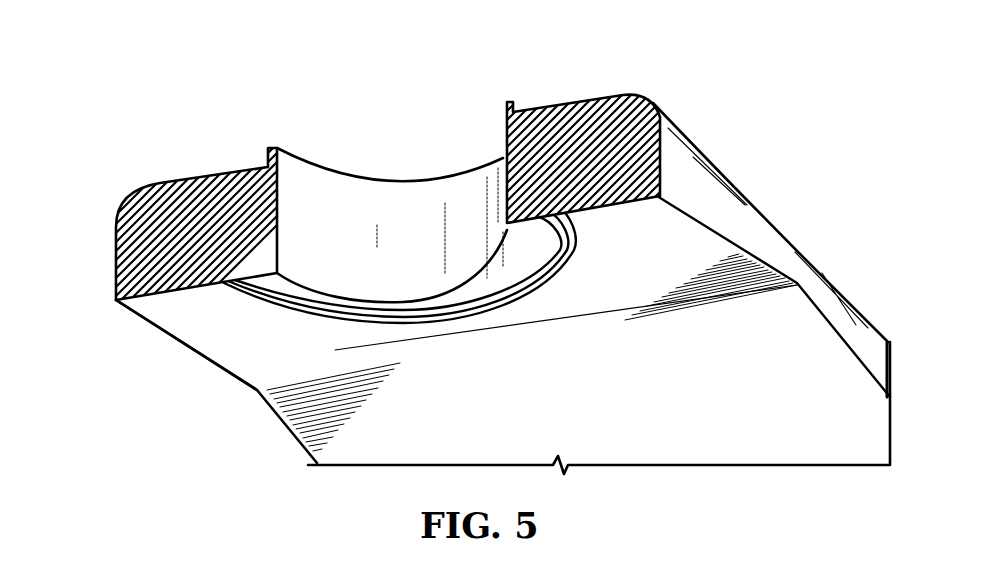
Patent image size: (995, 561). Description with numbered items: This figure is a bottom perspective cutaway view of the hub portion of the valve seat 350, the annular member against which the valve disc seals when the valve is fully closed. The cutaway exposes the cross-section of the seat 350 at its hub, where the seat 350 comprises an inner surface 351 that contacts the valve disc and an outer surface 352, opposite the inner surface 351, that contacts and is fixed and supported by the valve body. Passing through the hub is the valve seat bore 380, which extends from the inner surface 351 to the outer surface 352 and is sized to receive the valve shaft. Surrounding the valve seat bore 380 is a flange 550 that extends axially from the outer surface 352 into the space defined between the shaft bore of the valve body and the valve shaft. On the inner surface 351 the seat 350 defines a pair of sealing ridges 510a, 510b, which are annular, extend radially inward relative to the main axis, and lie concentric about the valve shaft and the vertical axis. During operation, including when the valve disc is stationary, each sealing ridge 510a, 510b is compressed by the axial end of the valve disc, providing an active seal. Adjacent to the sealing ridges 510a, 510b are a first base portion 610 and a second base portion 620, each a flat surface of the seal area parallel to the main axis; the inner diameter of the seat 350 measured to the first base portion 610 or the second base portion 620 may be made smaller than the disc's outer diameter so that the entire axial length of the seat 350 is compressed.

The seat 350 is at (763, 110).
The inner surface 351 is at (213, 335).
The outer surface 352 is at (190, 177).
The valve seat bore 380 is at (323, 202).
The flange 550 is at (513, 104).
The first base portion 610 is at (530, 268).
The first sealing ridge 510a is at (535, 293).
The second sealing ridge 510b is at (573, 270).
The second base portion 620 is at (633, 260).